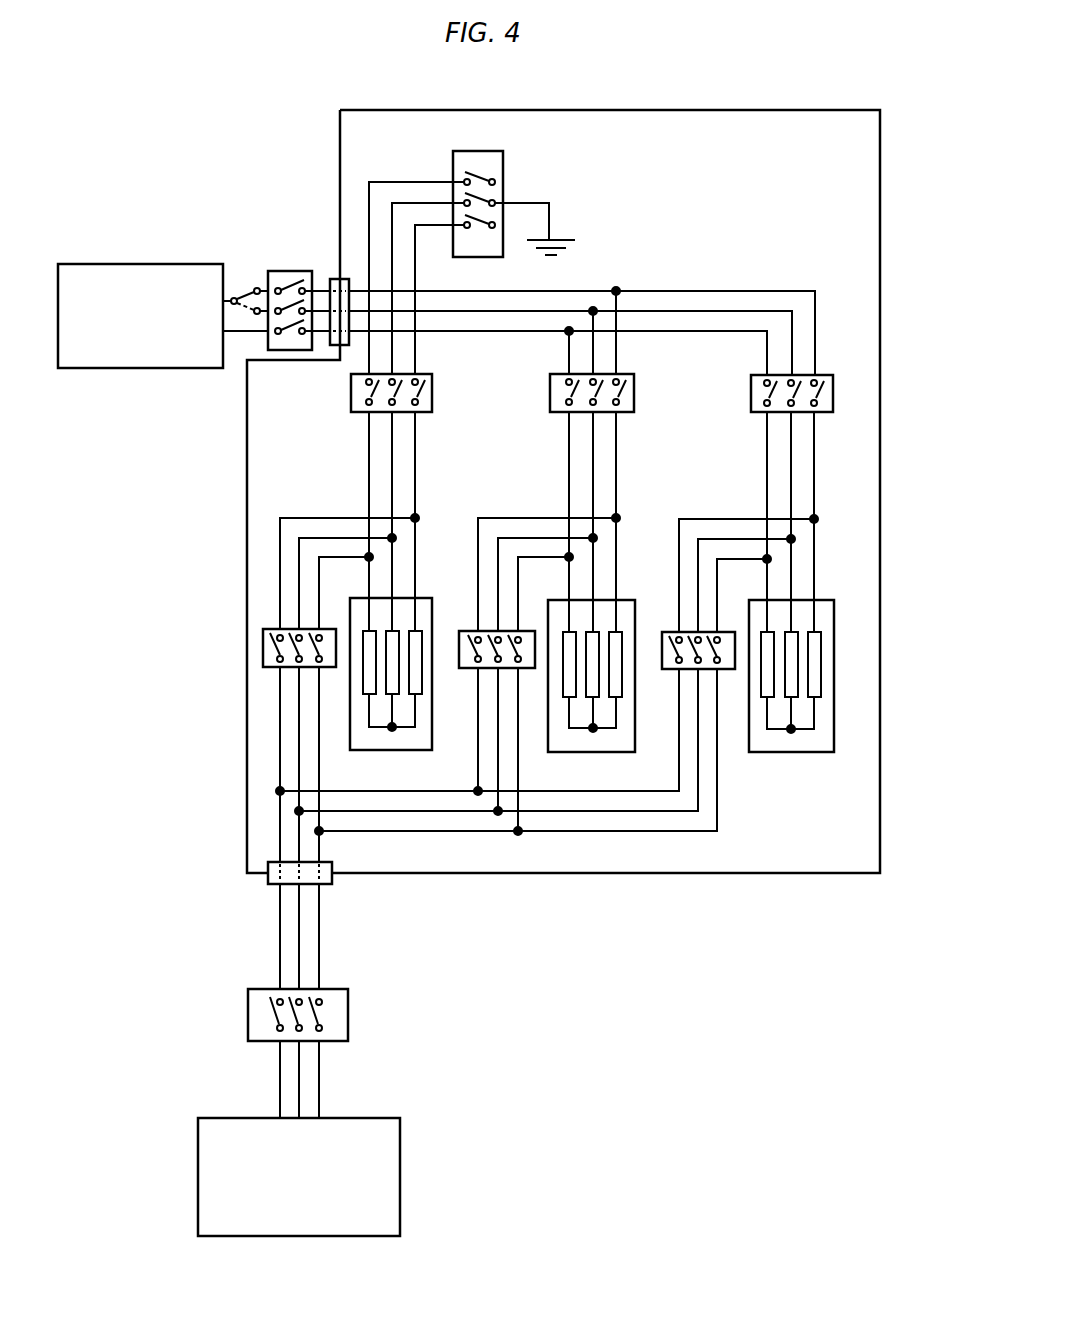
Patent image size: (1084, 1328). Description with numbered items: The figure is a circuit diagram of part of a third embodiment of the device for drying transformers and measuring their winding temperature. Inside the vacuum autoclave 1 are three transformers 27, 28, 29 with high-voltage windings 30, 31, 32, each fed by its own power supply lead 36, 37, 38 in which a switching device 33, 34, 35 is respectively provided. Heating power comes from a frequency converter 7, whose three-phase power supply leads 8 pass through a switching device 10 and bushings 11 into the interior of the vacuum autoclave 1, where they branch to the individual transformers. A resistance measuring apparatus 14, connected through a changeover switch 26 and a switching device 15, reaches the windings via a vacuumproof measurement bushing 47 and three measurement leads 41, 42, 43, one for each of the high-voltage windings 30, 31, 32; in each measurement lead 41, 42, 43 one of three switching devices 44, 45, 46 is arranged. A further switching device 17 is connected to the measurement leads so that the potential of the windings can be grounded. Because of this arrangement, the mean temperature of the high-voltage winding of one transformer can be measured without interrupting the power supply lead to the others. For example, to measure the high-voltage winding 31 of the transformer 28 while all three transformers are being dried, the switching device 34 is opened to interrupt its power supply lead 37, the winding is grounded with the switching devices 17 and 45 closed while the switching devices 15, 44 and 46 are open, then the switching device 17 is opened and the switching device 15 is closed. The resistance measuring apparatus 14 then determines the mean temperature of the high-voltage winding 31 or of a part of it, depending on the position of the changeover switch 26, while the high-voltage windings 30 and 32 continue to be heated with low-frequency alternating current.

The vacuum autoclave 1 is at (845, 877).
The frequency converter 7 is at (198, 1175).
The three-phase power supply leads 8 is at (319, 952).
The switching device 10 is at (248, 1013).
The bushings 11 is at (268, 883).
The resistance measuring apparatus 14 is at (139, 264).
The switching device 15 is at (287, 271).
The further switching device 17 is at (473, 160).
The changeover switch 26 is at (244, 290).
The transformer 27 is at (363, 752).
The transformer 28 is at (562, 752).
The transformer 29 is at (758, 752).
The high-voltage winding 30 is at (422, 678).
The high-voltage winding 31 is at (622, 683).
The high-voltage winding 32 is at (822, 682).
The switching device 33 is at (262, 627).
The switching device 34 is at (459, 629).
The switching device 35 is at (665, 632).
The power supply lead 36 is at (318, 570).
The power supply lead 37 is at (516, 758).
The power supply lead 38 is at (752, 559).
The measurement lead 41 is at (369, 470).
The measurement lead 42 is at (569, 470).
The measurement lead 43 is at (742, 332).
The switching device 44 is at (432, 390).
The switching device 45 is at (634, 390).
The switching device 46 is at (833, 390).
The vacuumproof measurement bushing 47 is at (335, 279).